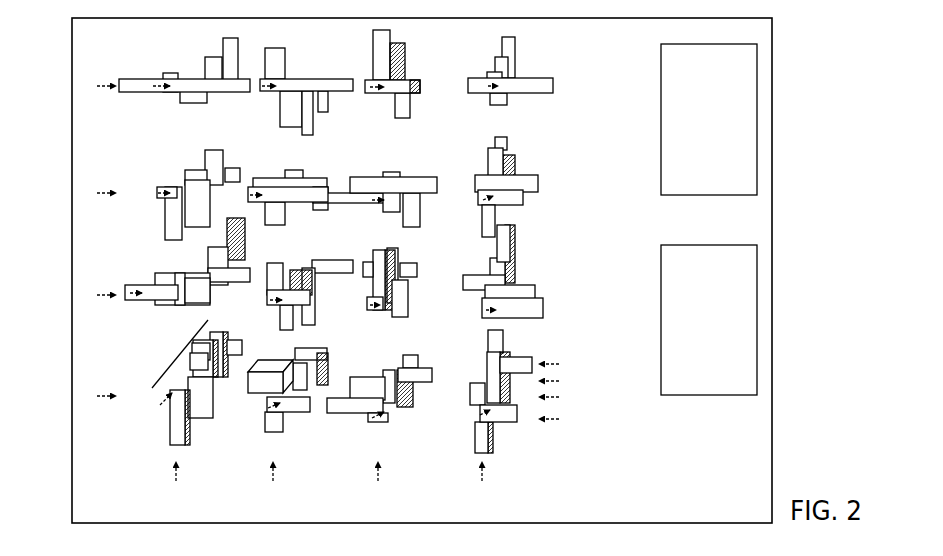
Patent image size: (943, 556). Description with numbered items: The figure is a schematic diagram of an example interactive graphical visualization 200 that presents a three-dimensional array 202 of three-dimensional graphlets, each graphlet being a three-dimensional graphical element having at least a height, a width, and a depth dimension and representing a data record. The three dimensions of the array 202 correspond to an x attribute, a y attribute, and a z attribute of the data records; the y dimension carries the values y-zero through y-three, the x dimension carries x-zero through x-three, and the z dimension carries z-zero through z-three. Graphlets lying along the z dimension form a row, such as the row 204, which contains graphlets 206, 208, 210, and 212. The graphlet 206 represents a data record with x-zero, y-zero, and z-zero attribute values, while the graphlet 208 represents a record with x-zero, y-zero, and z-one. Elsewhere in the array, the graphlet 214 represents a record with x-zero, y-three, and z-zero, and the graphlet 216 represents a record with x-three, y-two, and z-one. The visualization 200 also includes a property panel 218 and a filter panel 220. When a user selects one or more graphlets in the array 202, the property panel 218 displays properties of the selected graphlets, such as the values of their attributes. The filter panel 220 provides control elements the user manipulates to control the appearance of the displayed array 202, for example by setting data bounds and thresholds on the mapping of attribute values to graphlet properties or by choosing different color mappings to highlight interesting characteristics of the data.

The interactive graphical visualization 200 is at (772, 270).
The 3D array 202 is at (72, 450).
The row 204 is at (176, 358).
The graphlet 206 is at (170, 423).
The graphlet 208 is at (206, 418).
The graphlet 210 is at (222, 332).
The graphlet 212 is at (238, 342).
The graphlet 214 is at (144, 78).
The graphlet 216 is at (487, 168).
The property panel 218 is at (661, 120).
The filter panel 220 is at (661, 321).